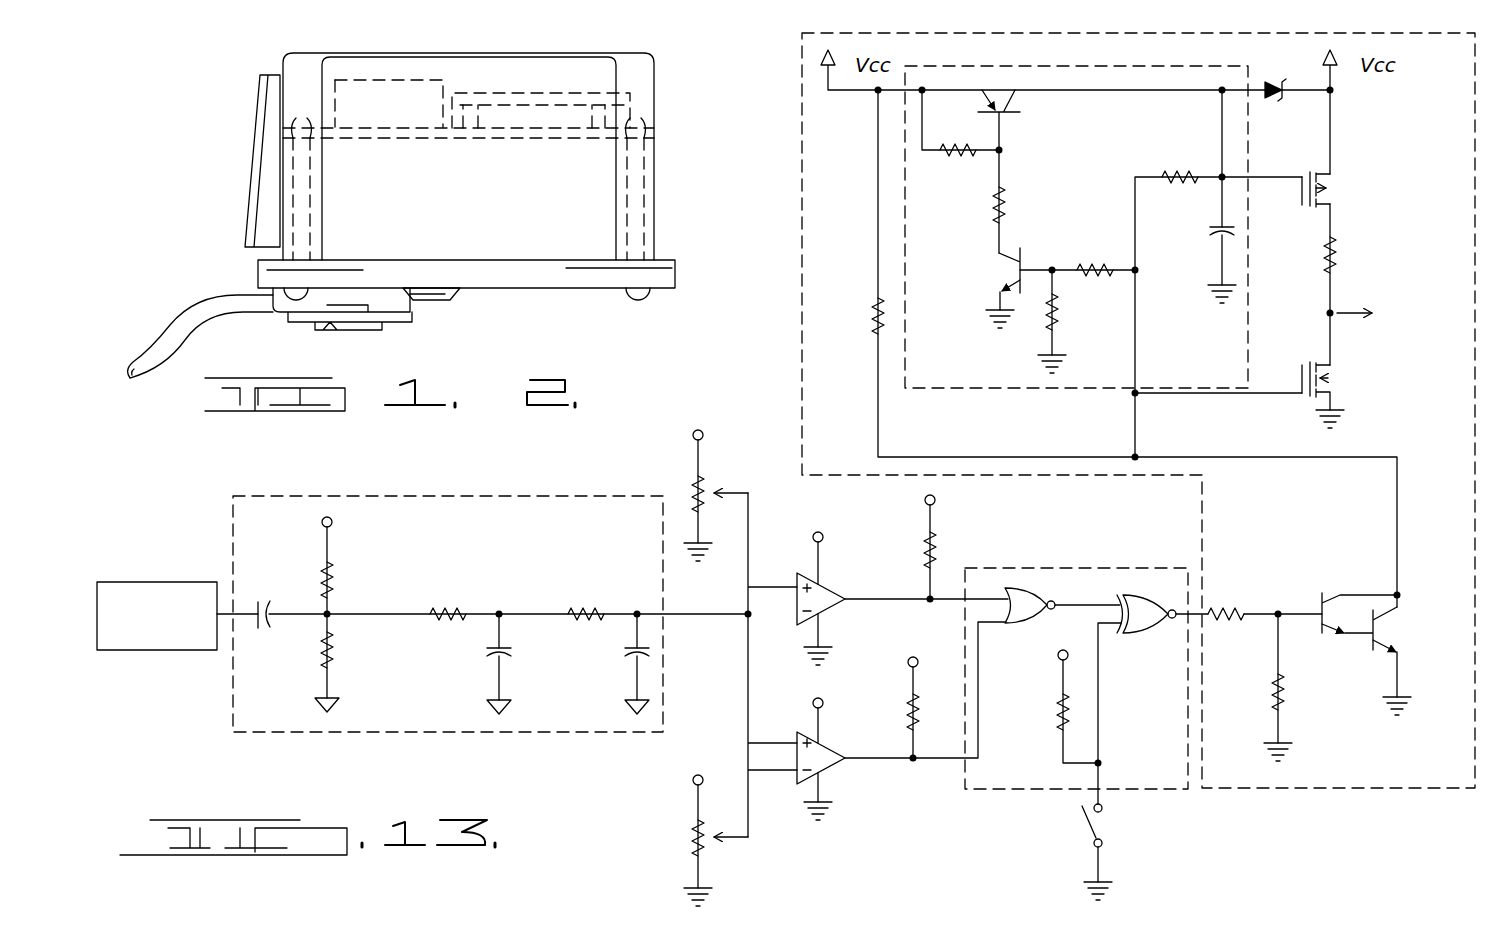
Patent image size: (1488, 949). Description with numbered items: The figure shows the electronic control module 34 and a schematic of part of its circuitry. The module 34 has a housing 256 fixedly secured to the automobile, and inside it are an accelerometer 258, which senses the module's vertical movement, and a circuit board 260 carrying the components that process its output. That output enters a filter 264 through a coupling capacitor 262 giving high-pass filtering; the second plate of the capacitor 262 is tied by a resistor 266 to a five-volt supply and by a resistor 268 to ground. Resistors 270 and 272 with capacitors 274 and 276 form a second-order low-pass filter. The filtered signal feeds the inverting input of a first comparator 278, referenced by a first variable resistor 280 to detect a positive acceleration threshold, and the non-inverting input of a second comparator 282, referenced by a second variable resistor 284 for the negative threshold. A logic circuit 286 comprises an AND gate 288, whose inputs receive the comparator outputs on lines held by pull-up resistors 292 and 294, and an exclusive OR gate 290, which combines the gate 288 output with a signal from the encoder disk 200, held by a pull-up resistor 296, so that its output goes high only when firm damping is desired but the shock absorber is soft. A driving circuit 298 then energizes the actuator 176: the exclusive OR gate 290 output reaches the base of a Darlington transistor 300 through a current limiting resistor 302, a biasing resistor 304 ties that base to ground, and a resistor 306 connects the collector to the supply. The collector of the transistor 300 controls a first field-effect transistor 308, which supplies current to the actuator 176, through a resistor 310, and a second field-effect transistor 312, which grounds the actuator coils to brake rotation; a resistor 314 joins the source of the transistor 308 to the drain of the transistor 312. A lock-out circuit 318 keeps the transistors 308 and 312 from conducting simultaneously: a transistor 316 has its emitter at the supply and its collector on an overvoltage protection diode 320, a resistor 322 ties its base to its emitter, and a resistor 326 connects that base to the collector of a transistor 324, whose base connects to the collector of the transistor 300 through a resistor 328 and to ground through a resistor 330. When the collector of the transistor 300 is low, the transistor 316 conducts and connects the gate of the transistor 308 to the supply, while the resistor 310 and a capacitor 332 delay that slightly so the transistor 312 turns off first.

In FIG. 12, the electronic control module 34 is at (238, 140).
In FIG. 12, the housing 256 is at (662, 68).
In FIG. 12, the accelerometer 258 is at (370, 117).
In FIG. 13, the accelerometer 258 is at (143, 650).
In FIG. 12, the circuit board 260 is at (513, 102).
In FIG. 13, the capacitor 262 is at (263, 601).
In FIG. 13, the filter 264 is at (548, 495).
In FIG. 13, the resistor 266 is at (325, 585).
In FIG. 13, the resistor 268 is at (330, 648).
In FIG. 13, the resistor 270 is at (440, 608).
In FIG. 13, the resistor 272 is at (580, 608).
In FIG. 13, the capacitor 274 is at (487, 652).
In FIG. 13, the capacitor 276 is at (626, 654).
In FIG. 13, the first comparator 278 is at (805, 575).
In FIG. 13, the first variable resistor 280 is at (700, 494).
In FIG. 13, the second comparator 282 is at (822, 758).
In FIG. 13, the second variable resistor 284 is at (697, 833).
In FIG. 13, the logic circuit 286 is at (1137, 790).
In FIG. 13, the AND gate 288 is at (1023, 592).
In FIG. 13, the exclusive OR gate 290 is at (1133, 597).
In FIG. 13, the pull-up resistor 292 is at (925, 553).
In FIG. 13, the pull-up resistor 294 is at (910, 716).
In FIG. 13, the pull-up resistor 296 is at (1060, 727).
In FIG. 13, the driving circuit 298 is at (1350, 790).
In FIG. 13, the Darlington transistor 300 is at (1354, 592).
In FIG. 13, the current limiting resistor 302 is at (1223, 617).
In FIG. 13, the biasing resistor 304 is at (1275, 691).
In FIG. 13, the resistor 306 is at (875, 318).
In FIG. 13, the first field-effect transistor 308 is at (1331, 188).
In FIG. 13, the resistor 310 is at (1163, 178).
In FIG. 13, the second field-effect transistor 312 is at (1302, 366).
In FIG. 13, the resistor 314 is at (1336, 256).
In FIG. 13, the transistor 316 is at (1012, 117).
In FIG. 13, the lock-out circuit 318 is at (905, 225).
In FIG. 13, the overvoltage protection diode 320 is at (1283, 80).
In FIG. 13, the resistor 322 is at (938, 146).
In FIG. 13, the transistor 324 is at (1015, 272).
In FIG. 13, the resistor 326 is at (1000, 215).
In FIG. 13, the resistor 328 is at (1097, 276).
In FIG. 13, the resistor 330 is at (1050, 332).
In FIG. 13, the capacitor 332 is at (1212, 234).
In FIG. 13, the encoder disk 200 is at (1084, 831).
In FIG. 13, the actuator 176 is at (1391, 338).